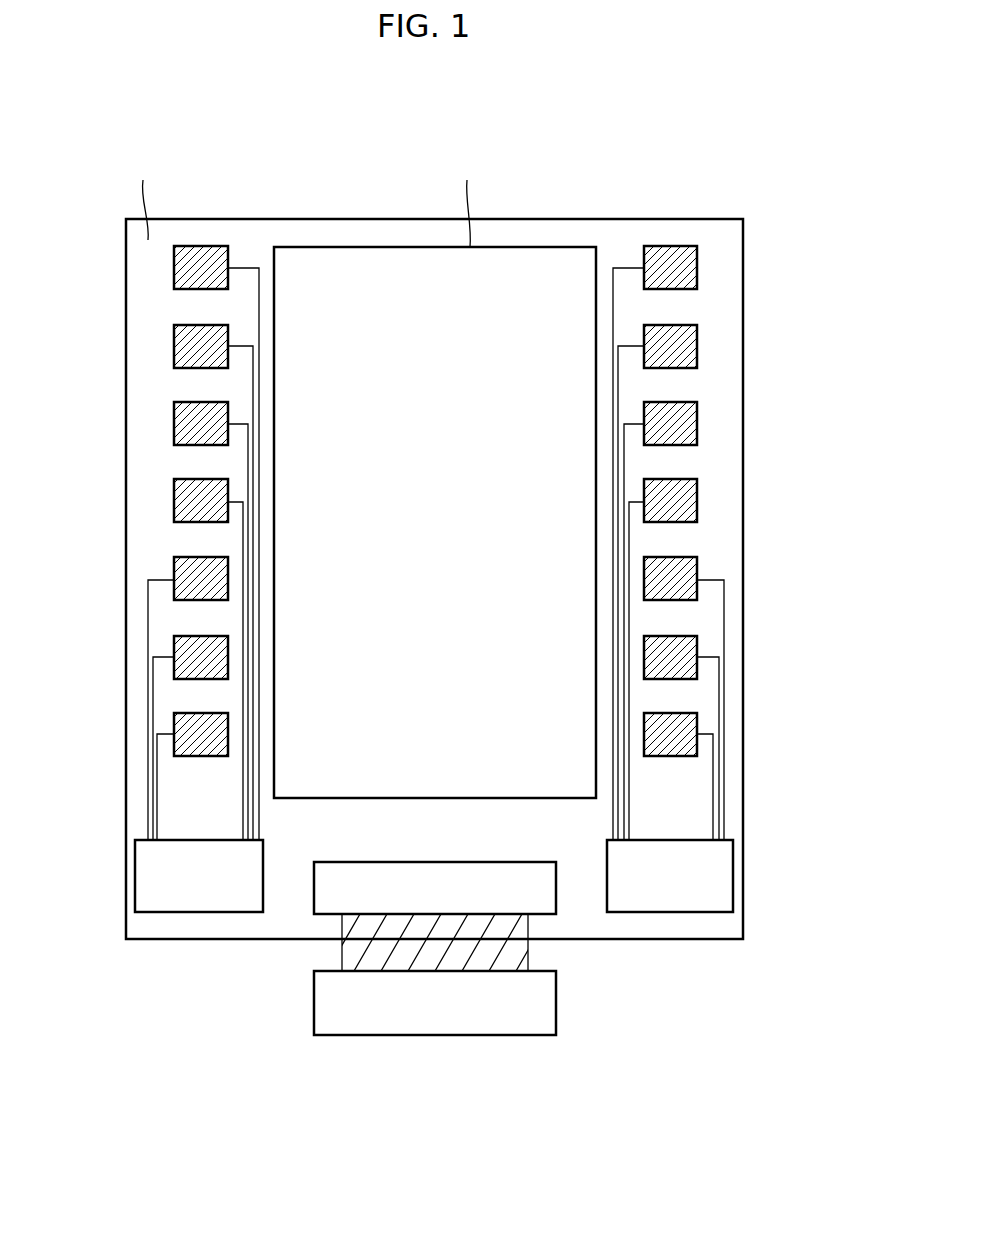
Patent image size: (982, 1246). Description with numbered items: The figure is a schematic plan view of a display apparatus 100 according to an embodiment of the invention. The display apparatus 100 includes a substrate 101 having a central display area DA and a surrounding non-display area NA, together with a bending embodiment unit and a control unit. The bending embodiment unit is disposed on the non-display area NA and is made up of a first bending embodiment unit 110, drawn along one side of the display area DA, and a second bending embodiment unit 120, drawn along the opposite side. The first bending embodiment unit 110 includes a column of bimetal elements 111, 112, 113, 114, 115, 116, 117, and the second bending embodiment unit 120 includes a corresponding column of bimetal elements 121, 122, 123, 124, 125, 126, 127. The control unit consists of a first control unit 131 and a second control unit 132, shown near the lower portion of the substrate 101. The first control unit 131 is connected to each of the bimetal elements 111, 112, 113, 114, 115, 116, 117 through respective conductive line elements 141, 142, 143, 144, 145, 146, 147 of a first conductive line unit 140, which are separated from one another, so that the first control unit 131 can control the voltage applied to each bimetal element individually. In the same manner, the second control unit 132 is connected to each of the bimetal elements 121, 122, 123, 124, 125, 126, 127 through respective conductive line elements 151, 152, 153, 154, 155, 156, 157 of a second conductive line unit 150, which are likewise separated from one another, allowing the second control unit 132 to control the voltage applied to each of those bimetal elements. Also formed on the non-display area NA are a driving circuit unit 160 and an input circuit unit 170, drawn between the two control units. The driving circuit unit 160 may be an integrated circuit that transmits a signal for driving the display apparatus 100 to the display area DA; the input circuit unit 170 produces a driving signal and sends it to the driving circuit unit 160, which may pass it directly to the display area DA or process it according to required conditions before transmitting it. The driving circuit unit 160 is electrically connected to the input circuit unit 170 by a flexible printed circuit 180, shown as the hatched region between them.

The display apparatus 100 is at (722, 190).
The substrate 101 is at (743, 928).
The first bending embodiment unit 110 is at (72, 257).
The bimetal element 111 is at (174, 262).
The bimetal element 112 is at (174, 342).
The bimetal element 113 is at (174, 421).
The bimetal element 114 is at (174, 500).
The bimetal element 115 is at (174, 571).
The bimetal element 116 is at (174, 650).
The bimetal element 117 is at (174, 728).
The second bending embodiment unit 120 is at (799, 257).
The bimetal element 121 is at (697, 262).
The bimetal element 122 is at (697, 343).
The bimetal element 123 is at (697, 421).
The bimetal element 124 is at (697, 499).
The bimetal element 125 is at (697, 570).
The bimetal element 126 is at (697, 649).
The bimetal element 127 is at (697, 727).
The first control unit 131 is at (191, 905).
The second control unit 132 is at (680, 903).
The first conductive line unit 140 is at (350, 305).
The conductive line element 141 is at (259, 307).
The conductive line element 142 is at (253, 390).
The conductive line element 143 is at (248, 457).
The conductive line element 144 is at (243, 537).
The conductive line element 145 is at (148, 613).
The conductive line element 146 is at (153, 695).
The conductive line element 147 is at (157, 808).
The second conductive line unit 150 is at (520, 305).
The conductive line element 151 is at (613, 308).
The conductive line element 152 is at (618, 389).
The conductive line element 153 is at (624, 457).
The conductive line element 154 is at (629, 537).
The conductive line element 155 is at (722, 613).
The conductive line element 156 is at (717, 695).
The conductive line element 157 is at (713, 797).
The driving circuit unit 160 is at (322, 905).
The input circuit unit 170 is at (360, 1022).
The flexible printed circuit 180 is at (518, 955).